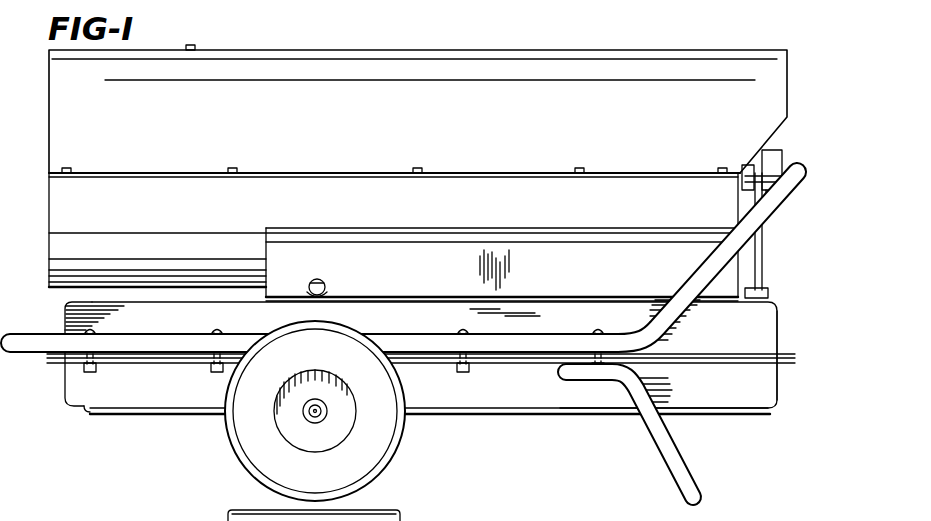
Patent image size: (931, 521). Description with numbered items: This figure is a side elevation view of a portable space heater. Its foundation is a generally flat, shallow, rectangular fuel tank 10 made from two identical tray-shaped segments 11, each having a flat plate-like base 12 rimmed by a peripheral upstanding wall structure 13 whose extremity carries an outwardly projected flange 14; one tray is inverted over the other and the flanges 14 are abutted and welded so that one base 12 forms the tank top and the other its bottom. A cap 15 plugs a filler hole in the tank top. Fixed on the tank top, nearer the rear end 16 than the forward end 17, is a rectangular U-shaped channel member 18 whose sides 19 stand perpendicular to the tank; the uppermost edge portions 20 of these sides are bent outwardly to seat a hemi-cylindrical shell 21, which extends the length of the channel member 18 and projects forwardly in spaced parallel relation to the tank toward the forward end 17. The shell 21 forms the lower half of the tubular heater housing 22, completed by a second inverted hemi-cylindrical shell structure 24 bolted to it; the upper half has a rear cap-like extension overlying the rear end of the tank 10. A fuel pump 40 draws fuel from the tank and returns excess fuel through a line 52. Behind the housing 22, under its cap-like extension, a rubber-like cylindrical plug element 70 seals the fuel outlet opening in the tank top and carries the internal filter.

The fuel tank 10 is at (794, 320).
The tray-shaped segment 11 is at (786, 394).
The base 12 is at (70, 303).
The peripheral upstanding wall structure 13 is at (728, 401).
The flange 14 is at (796, 360).
The cap 15 is at (317, 280).
The rear end 16 is at (778, 344).
The forward end 17 is at (62, 325).
The channel member 18 is at (258, 252).
The sides 19 is at (430, 256).
The uppermost edge portions 20 is at (516, 238).
The hemi-cylindrically shaped shell 21 is at (310, 209).
The heater housing 22 is at (351, 43).
The second hemi-cylindrical shell structure 24 is at (314, 120).
The pump 40 is at (768, 148).
The return line 52 is at (764, 252).
The plug element 70 is at (778, 287).